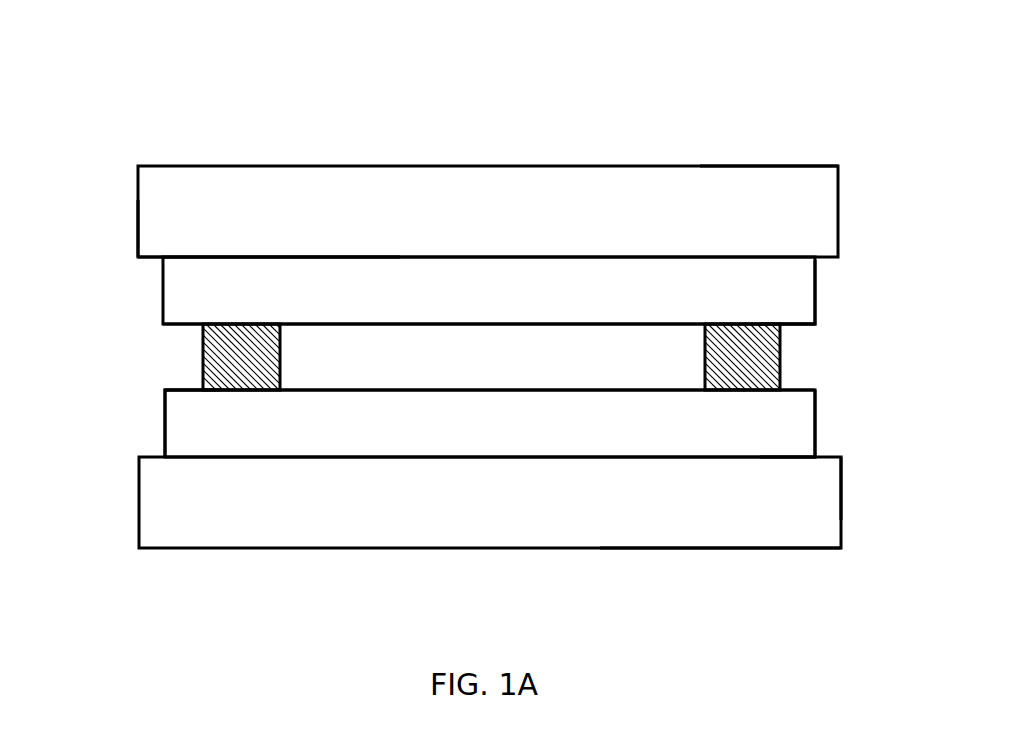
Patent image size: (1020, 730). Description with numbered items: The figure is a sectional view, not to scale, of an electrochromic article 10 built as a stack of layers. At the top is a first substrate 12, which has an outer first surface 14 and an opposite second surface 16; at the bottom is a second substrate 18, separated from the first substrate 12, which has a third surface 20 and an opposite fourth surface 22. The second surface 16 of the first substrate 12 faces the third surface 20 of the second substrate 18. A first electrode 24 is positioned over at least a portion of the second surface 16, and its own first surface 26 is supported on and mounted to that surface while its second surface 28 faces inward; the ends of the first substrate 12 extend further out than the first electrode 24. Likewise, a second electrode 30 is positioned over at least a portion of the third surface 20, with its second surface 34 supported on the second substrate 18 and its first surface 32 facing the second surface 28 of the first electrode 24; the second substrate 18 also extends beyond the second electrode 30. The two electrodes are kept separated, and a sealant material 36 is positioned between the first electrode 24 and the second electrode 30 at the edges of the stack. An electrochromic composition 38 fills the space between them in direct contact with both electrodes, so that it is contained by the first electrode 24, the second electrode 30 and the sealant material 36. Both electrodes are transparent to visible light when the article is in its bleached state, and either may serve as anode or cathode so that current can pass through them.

The electrochromic article 10 is at (76, 60).
The first substrate 12 is at (488, 211).
The first surface 14 is at (785, 163).
The second surface 16 is at (146, 262).
The second substrate 18 is at (490, 502).
The third surface 20 is at (833, 454).
The fourth surface 22 is at (742, 552).
The first electrode 24 is at (489, 290).
The first surface 26 is at (207, 255).
The second surface 28 is at (804, 329).
The second electrode 30 is at (490, 423).
The first surface 32 is at (185, 396).
The second surface 34 is at (789, 454).
The sealant material 36 is at (208, 358).
The electrochromic composition 38 is at (489, 357).